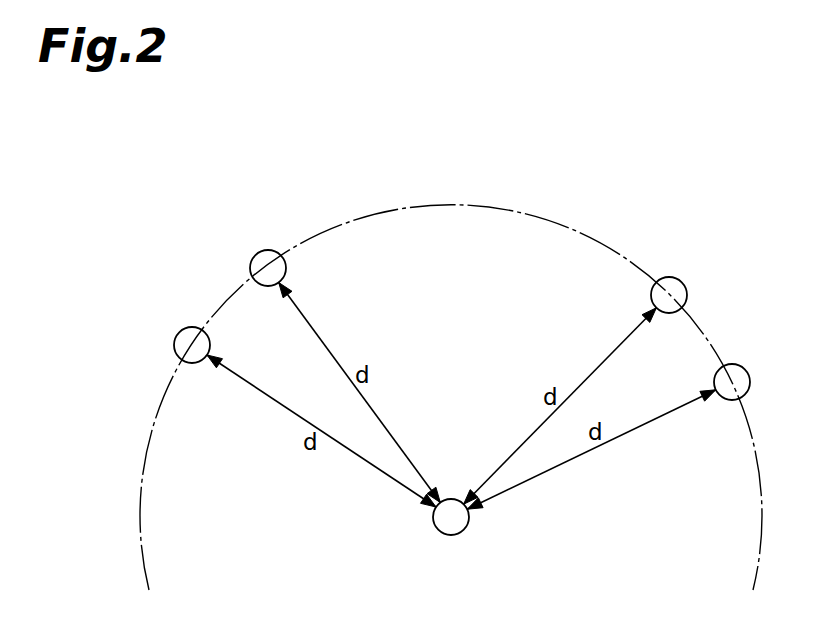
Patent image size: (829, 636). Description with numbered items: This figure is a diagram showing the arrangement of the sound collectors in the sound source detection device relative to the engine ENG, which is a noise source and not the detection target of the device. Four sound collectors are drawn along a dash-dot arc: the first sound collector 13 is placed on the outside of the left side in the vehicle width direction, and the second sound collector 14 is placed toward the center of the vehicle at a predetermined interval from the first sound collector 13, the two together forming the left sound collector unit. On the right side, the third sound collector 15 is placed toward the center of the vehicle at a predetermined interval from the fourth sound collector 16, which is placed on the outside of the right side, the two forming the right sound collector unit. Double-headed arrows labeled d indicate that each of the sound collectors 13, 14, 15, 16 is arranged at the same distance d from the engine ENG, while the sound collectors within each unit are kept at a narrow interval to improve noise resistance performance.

The engine ENG is at (462, 531).
The first sound collector 13 is at (187, 327).
The second sound collector 14 is at (257, 251).
The third sound collector 15 is at (676, 278).
The fourth sound collector 16 is at (743, 366).